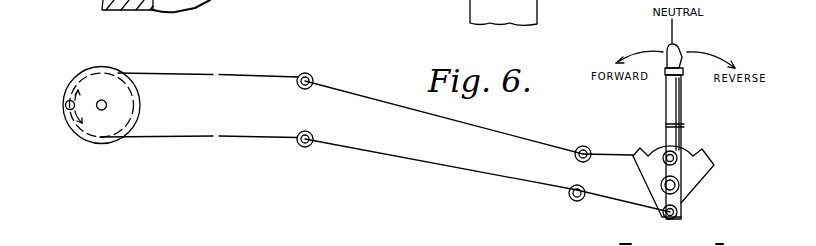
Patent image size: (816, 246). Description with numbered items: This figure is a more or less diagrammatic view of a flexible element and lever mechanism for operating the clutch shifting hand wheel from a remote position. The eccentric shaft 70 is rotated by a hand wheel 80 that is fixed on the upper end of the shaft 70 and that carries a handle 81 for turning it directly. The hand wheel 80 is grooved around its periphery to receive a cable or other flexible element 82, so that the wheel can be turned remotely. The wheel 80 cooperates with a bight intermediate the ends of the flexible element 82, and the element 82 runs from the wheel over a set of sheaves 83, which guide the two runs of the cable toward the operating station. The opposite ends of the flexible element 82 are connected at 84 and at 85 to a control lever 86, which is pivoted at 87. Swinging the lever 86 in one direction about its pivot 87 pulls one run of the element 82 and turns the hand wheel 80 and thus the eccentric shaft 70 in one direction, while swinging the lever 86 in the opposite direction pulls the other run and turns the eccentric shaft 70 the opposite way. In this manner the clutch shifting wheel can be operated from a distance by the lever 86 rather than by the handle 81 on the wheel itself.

The eccentric shaft 70 is at (107, 105).
The hand wheel 80 is at (102, 138).
The handle 81 is at (65, 105).
The flexible element 82 is at (386, 102).
The sheaves 83 is at (306, 73).
The connection point 84 is at (682, 154).
The connection point 85 is at (678, 213).
The control lever 86 is at (666, 102).
The pivot 87 is at (680, 187).